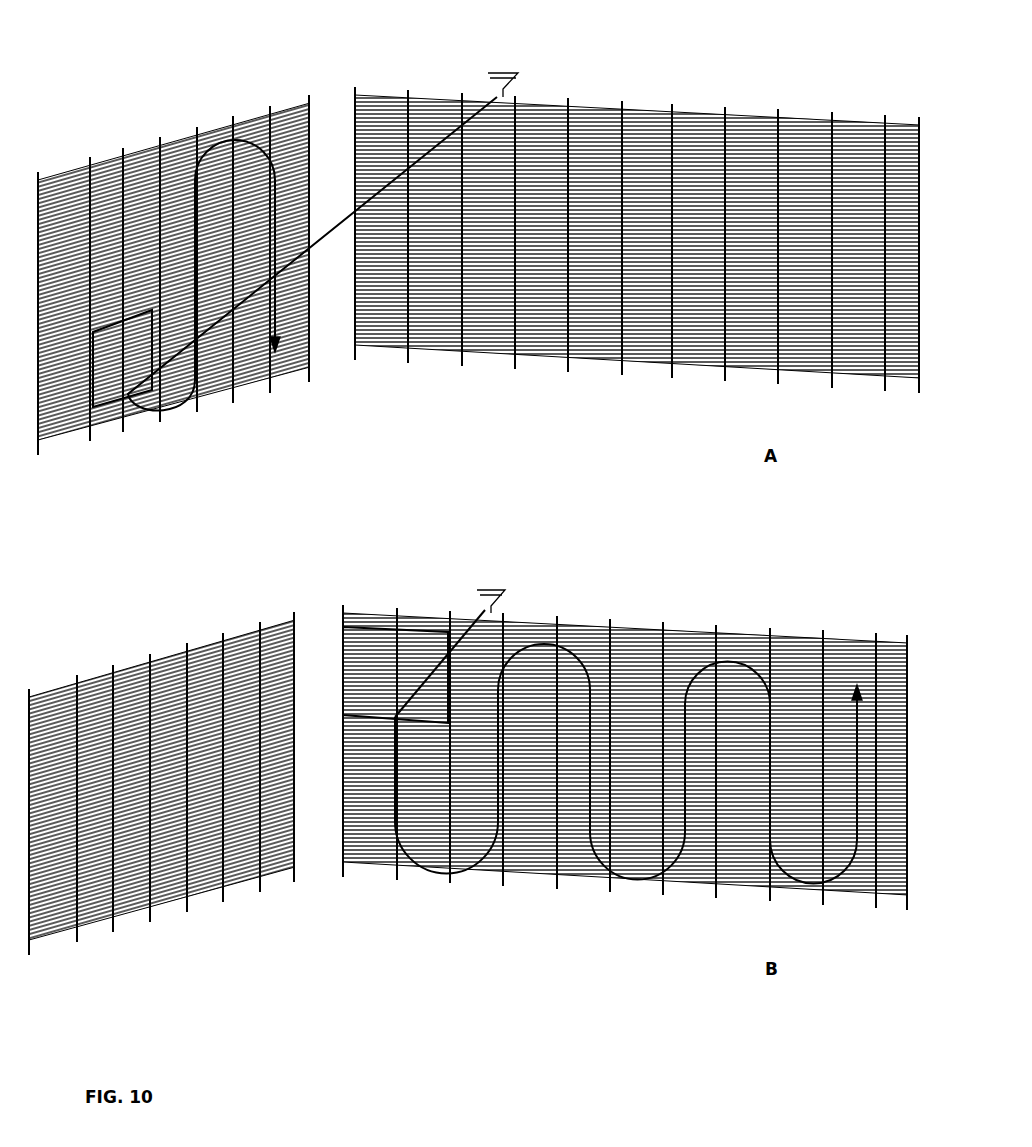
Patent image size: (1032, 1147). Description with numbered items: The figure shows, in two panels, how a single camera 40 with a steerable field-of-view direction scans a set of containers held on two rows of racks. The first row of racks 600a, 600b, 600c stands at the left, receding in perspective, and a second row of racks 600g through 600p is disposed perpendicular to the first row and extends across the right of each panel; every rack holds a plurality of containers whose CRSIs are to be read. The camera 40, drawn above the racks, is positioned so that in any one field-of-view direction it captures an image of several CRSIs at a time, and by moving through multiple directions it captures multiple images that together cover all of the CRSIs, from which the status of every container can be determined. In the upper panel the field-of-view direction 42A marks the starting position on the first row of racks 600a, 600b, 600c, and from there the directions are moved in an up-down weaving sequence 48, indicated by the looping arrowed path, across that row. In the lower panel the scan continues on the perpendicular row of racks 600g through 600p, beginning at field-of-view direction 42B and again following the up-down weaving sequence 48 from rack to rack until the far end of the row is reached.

The rack 600a is at (60, 178).
The rack 600b is at (95, 160).
The rack 600c is at (132, 148).
The rack 600g is at (410, 85).
The rack 600p is at (890, 120).
The camera 40 is at (507, 70).
The FOV direction 42A is at (107, 400).
The FOV direction 42B is at (343, 663).
The weaving sequence 48 is at (177, 405).